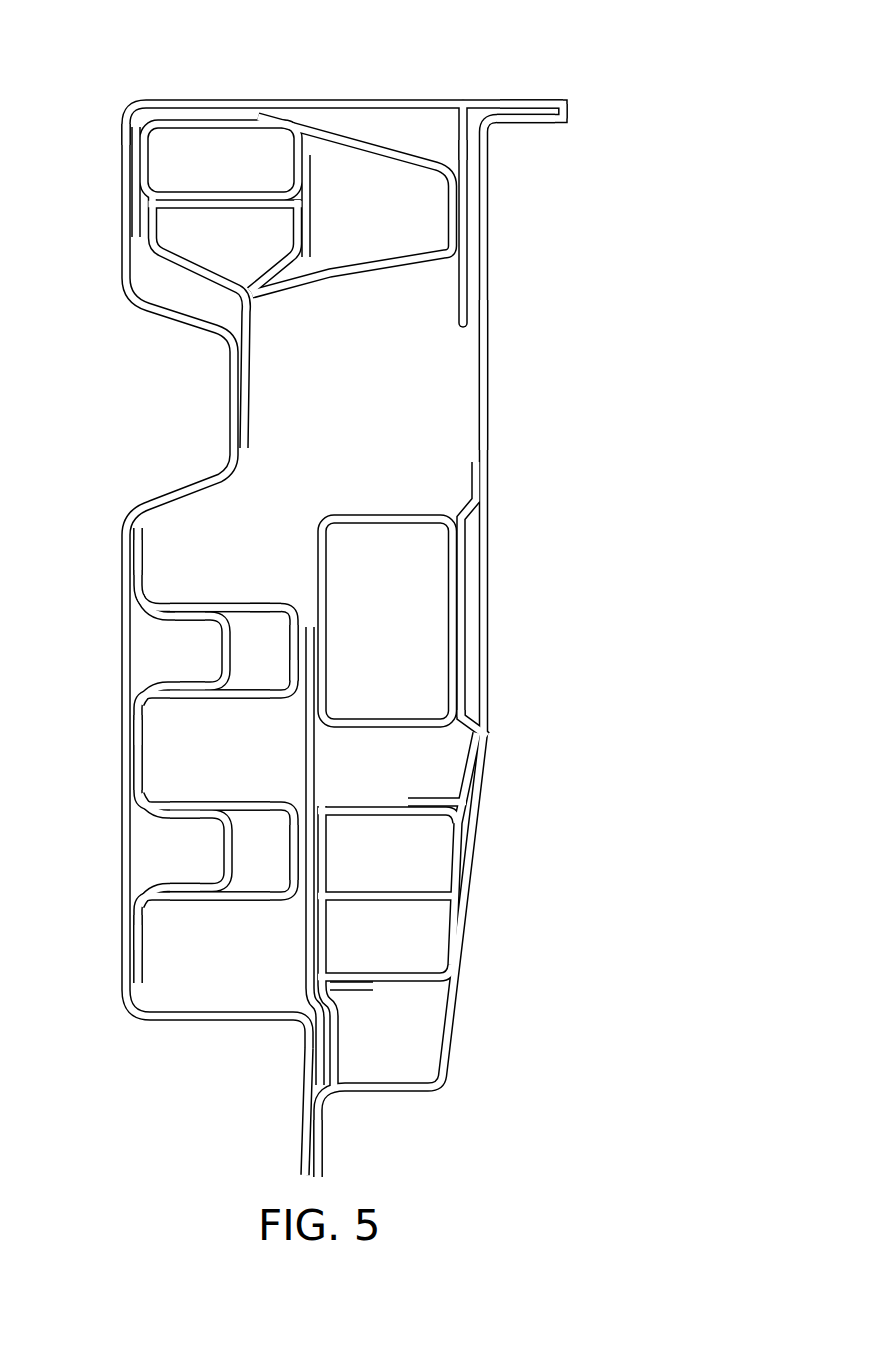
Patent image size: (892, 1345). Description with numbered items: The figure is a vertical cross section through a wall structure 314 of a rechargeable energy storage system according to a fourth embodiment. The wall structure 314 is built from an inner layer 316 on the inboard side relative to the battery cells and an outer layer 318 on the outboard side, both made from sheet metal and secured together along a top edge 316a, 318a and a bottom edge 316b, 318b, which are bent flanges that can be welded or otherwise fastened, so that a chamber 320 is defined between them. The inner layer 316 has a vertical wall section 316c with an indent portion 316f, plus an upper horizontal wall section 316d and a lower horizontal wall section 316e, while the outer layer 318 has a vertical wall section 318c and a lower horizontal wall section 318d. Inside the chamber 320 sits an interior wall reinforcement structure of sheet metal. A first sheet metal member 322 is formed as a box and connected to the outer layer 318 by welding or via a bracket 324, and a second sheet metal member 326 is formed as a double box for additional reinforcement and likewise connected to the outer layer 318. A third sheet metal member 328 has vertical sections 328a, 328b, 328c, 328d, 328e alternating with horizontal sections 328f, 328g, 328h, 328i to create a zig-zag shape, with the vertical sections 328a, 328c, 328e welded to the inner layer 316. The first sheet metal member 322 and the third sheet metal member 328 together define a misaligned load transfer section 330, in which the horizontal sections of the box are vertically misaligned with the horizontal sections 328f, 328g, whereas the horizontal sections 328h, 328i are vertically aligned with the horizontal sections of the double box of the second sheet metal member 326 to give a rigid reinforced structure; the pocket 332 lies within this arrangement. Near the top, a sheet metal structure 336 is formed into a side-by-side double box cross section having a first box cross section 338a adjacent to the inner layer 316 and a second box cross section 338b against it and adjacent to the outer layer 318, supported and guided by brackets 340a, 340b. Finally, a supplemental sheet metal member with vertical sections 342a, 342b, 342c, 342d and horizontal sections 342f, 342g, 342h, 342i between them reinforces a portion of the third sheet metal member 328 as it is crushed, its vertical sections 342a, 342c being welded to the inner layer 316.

The wall structure 314 is at (547, 66).
The inner layer 316 is at (114, 94).
The top edge of inner layer 316a is at (545, 103).
The bottom edge of inner layer 316b is at (305, 1148).
The vertical wall section of inner layer 316c is at (127, 668).
The upper horizontal wall section of inner layer 316d is at (205, 100).
The lower horizontal wall section of inner layer 316e is at (227, 1018).
The indent portion 316f is at (232, 400).
The outer layer 318 is at (495, 383).
The top edge of outer layer 318a is at (523, 120).
The bottom edge of outer layer 318b is at (322, 1157).
The vertical wall section of outer layer 318c is at (488, 420).
The lower horizontal wall section of outer layer 318d is at (378, 1092).
The chamber 320 is at (322, 457).
The first sheet metal member 322 is at (368, 518).
The bracket 324 is at (468, 720).
The second sheet metal member 326 is at (372, 807).
The third sheet metal member 328 is at (194, 708).
The vertical section of third sheet metal member 328a is at (140, 553).
The vertical section of third sheet metal member 328b is at (302, 657).
The vertical section of third sheet metal member 328c is at (138, 768).
The vertical section of third sheet metal member 328d is at (298, 862).
The vertical section of third sheet metal member 328e is at (140, 954).
The horizontal section of third sheet metal member 328f is at (173, 607).
The horizontal section of third sheet metal member 328g is at (218, 699).
The horizontal section of third sheet metal member 328h is at (213, 807).
The horizontal section of third sheet metal member 328i is at (220, 898).
The misaligned load transfer section 330 is at (268, 578).
The pocket 332 is at (229, 650).
The sheet metal structure 336 is at (352, 186).
The first box cross section 338a is at (137, 133).
The second box cross section 338b is at (410, 150).
The bracket 340a is at (200, 305).
The bracket 340b is at (466, 147).
The vertical section of sheet metal member 342a is at (130, 563).
The vertical section of sheet metal member 342b is at (265, 676).
The vertical section of sheet metal member 342c is at (132, 732).
The vertical section of sheet metal member 342d is at (212, 853).
The horizontal section of sheet metal member 342f is at (187, 620).
The horizontal section of sheet metal member 342g is at (203, 688).
The horizontal section of sheet metal member 342h is at (181, 822).
The horizontal section of sheet metal member 342i is at (177, 888).